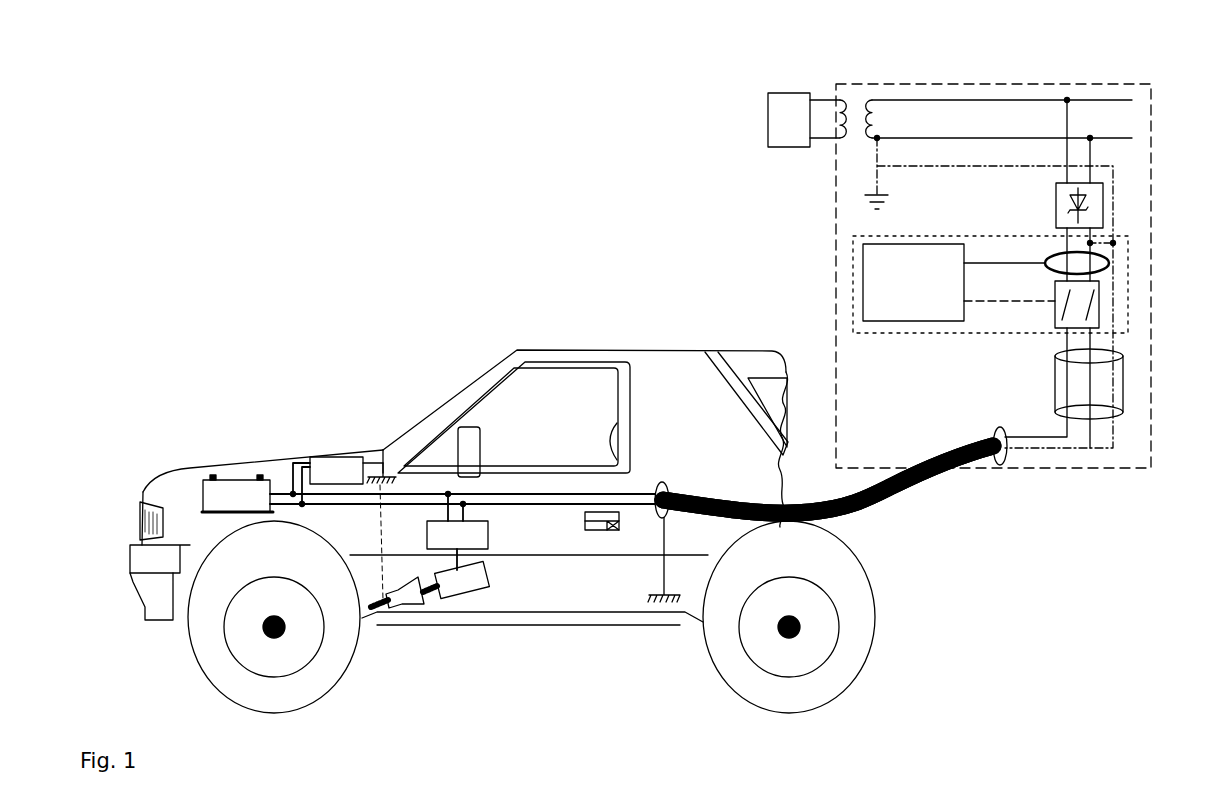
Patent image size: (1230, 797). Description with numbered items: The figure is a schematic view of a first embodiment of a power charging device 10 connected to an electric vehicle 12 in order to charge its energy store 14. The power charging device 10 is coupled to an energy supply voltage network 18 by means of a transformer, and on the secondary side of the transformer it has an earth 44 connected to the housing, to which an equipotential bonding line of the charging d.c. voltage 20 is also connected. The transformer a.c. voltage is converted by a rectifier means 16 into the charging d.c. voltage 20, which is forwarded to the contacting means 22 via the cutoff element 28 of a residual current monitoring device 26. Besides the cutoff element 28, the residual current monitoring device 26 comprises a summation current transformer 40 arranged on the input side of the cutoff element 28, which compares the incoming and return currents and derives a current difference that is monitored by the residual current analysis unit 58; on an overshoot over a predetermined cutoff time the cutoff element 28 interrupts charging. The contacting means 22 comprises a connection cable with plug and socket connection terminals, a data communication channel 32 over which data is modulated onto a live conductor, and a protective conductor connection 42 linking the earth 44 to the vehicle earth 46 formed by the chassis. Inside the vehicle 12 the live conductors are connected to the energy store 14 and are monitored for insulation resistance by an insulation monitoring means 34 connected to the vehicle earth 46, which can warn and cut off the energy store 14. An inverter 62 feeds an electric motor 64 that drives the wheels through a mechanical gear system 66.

The power charging device 10 is at (1107, 73).
The electric vehicle 12 is at (380, 378).
The energy store 14 is at (428, 493).
The rectifier means 16 is at (1112, 220).
The energy supply voltage network 18 is at (820, 120).
The charging d.c. voltage 20 is at (1060, 448).
The contacting means 22 is at (927, 492).
The residual current monitoring device 26 is at (958, 236).
The cutoff element 28 is at (1100, 303).
The data communication channel 32 is at (828, 479).
The insulation monitoring means 34 is at (337, 482).
The summation current transformer 40 is at (1110, 267).
The protective conductor connection 42 is at (828, 479).
The earth 44 is at (888, 198).
The vehicle earth 46 is at (380, 462).
The residual current analysis unit 58 is at (959, 282).
The inverter 62 is at (457, 531).
The electric motor 64 is at (456, 579).
The mechanical gear system 66 is at (400, 600).